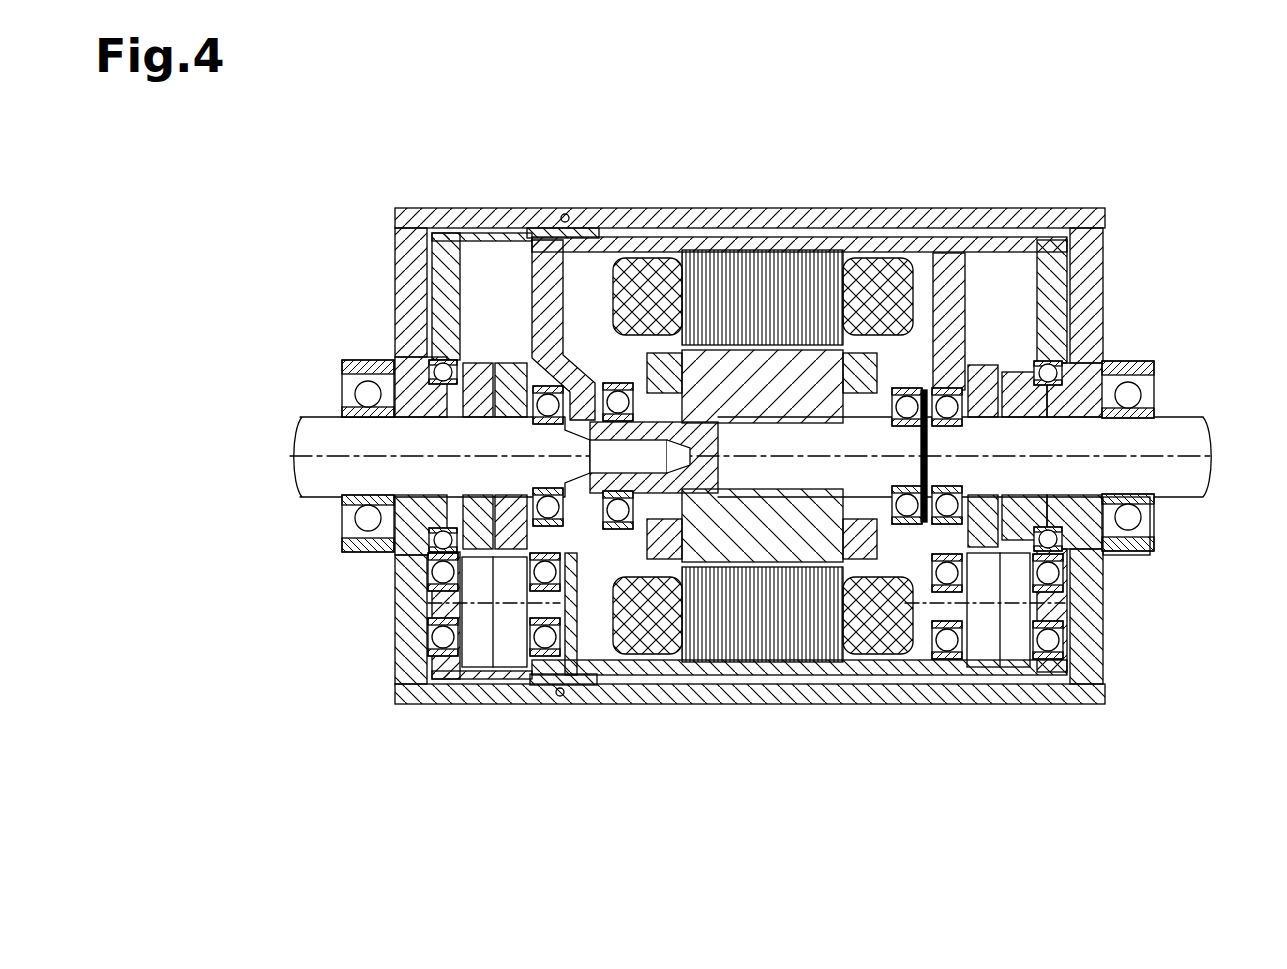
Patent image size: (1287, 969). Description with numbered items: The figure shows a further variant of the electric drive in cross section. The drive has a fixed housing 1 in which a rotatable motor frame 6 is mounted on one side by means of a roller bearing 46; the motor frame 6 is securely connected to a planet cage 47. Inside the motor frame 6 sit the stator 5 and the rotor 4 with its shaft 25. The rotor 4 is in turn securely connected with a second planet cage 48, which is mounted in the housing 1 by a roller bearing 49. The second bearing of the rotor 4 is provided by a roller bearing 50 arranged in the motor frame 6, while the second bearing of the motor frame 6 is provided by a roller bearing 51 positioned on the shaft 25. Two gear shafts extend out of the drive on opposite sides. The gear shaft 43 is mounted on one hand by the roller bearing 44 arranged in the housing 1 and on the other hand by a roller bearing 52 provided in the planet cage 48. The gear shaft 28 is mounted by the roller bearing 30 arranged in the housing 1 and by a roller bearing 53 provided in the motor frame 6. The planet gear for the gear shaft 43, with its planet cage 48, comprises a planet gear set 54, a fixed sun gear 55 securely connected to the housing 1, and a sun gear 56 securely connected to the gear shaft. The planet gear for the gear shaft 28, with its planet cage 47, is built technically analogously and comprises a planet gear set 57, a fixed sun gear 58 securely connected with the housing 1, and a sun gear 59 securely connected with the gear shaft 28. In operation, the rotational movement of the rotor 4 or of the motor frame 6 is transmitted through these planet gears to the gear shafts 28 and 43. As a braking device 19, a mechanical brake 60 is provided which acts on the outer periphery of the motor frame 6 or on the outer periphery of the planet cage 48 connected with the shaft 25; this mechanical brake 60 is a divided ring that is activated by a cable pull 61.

The fixed housing 1 is at (703, 238).
The rotor 4 is at (700, 208).
The stator 5 is at (788, 258).
The motor frame 6 is at (852, 250).
The braking device 19 is at (594, 199).
The shaft 25 is at (753, 472).
The gear shaft 28 is at (1175, 440).
The roller bearing 30 is at (1154, 552).
The gear shaft 43 is at (340, 437).
The roller bearing 44 is at (355, 535).
The roller bearing 46 is at (1085, 357).
The planet cage 47 is at (1060, 268).
The planet cage 48 is at (426, 271).
The roller bearing 49 is at (430, 370).
The roller bearing 50 is at (906, 518).
The roller bearing 51 is at (612, 520).
The roller bearing 52 is at (500, 552).
The roller bearing 53 is at (950, 520).
The planet gear set 54 is at (487, 628).
The fixed sun gear 55 is at (445, 266).
The sun gear 56 is at (510, 362).
The planet gear set 57 is at (1012, 637).
The fixed sun gear 58 is at (1025, 370).
The sun gear 59 is at (983, 363).
The mechanical brake 60 is at (572, 228).
The cable pull 61 is at (563, 213).